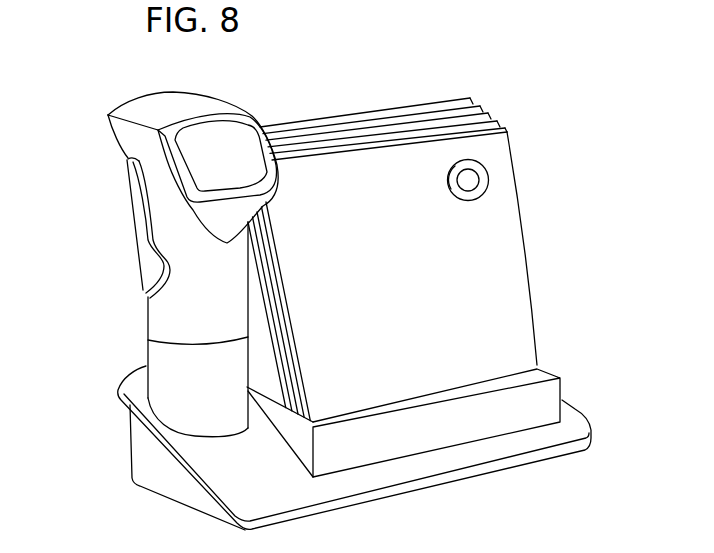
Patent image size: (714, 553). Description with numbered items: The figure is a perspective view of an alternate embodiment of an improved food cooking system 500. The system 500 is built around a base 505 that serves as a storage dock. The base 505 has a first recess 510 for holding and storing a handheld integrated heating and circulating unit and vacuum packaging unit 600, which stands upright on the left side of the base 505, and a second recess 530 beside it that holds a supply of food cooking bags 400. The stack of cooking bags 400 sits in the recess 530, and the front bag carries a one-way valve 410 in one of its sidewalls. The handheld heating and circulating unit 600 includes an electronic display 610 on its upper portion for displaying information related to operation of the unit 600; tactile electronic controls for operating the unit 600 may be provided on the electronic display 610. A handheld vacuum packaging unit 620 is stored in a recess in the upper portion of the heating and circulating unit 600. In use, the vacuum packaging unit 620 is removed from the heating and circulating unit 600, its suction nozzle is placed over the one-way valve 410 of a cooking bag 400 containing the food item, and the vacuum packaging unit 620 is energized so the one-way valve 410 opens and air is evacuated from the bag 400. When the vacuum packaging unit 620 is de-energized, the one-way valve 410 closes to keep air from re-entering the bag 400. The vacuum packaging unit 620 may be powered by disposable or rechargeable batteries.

The food cooking bag 400 is at (512, 245).
The one-way valve 410 is at (488, 178).
The food cooking system 500 is at (424, 61).
The base 505 is at (563, 402).
The first recess 510 is at (192, 433).
The recess 530 is at (478, 387).
The handheld integrated heating and circulating unit and vacuum packaging unit 600 is at (187, 315).
The electronic display 610 is at (233, 127).
The handheld vacuum packaging unit 620 is at (128, 107).